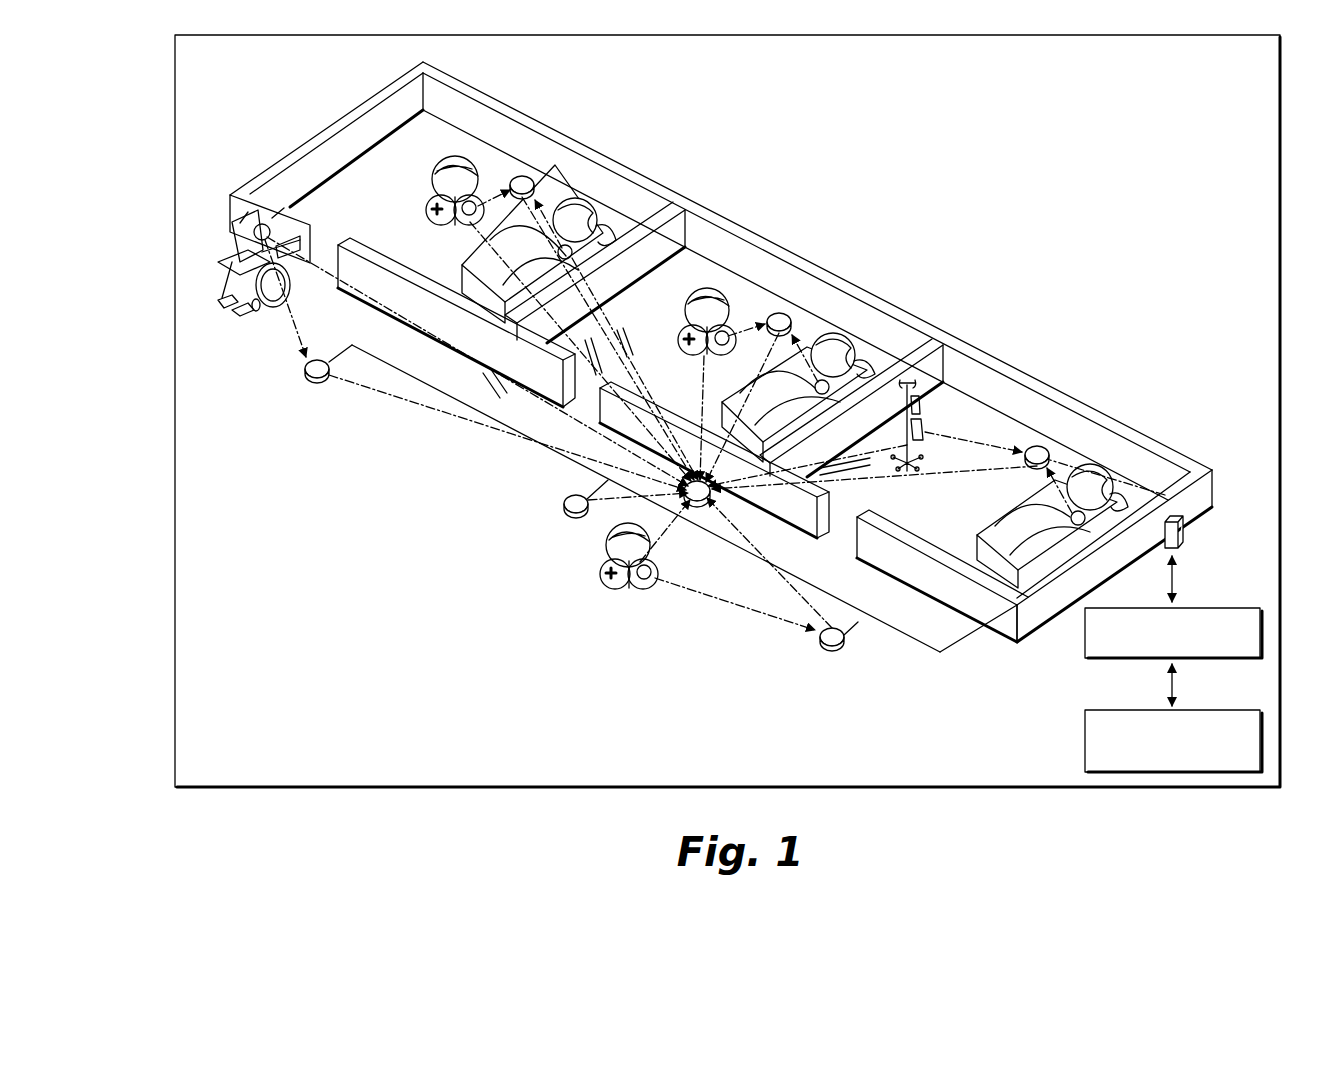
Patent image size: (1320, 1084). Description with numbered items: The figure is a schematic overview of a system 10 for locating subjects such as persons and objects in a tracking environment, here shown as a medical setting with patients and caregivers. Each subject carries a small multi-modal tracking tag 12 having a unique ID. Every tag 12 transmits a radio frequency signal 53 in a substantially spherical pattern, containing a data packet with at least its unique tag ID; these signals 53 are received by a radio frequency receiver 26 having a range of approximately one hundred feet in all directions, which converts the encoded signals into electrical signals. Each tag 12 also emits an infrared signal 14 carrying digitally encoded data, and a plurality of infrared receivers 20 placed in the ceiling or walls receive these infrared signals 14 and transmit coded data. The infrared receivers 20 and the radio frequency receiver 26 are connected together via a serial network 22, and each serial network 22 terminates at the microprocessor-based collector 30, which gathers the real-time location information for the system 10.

The system 10 is at (650, 787).
The tag 12 is at (250, 226).
The infrared signal 14 is at (488, 198).
The infrared receiver 20 is at (522, 176).
The serial network 22 is at (603, 190).
The radio frequency receiver 26 is at (710, 500).
The microprocessor-based collector 30 is at (1180, 520).
The radio frequency signal 53 is at (512, 290).